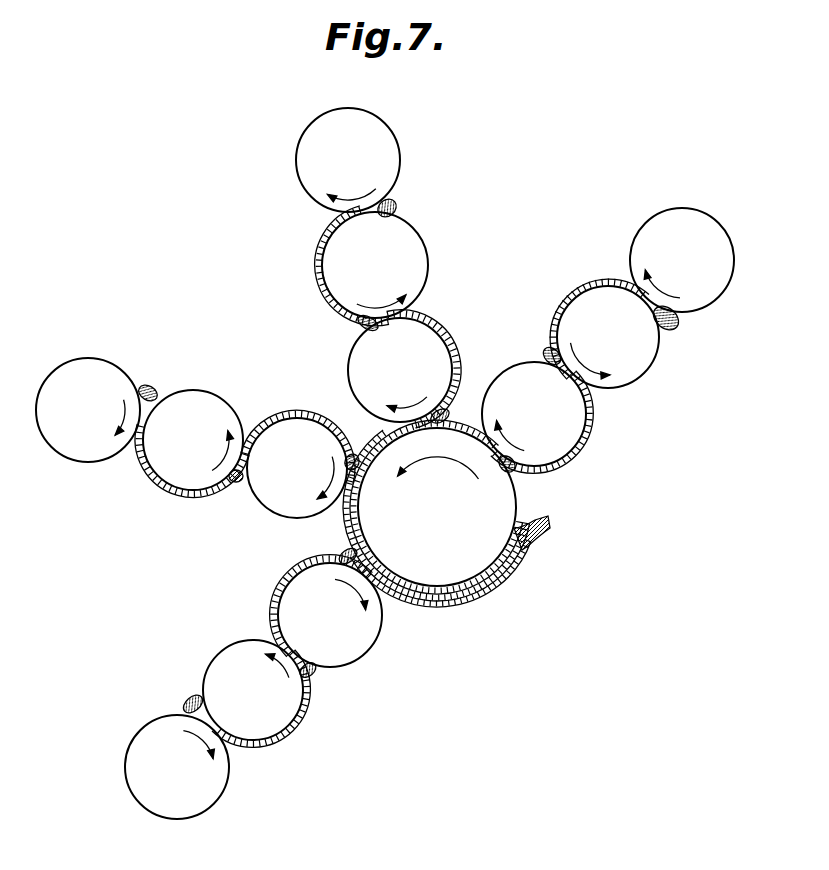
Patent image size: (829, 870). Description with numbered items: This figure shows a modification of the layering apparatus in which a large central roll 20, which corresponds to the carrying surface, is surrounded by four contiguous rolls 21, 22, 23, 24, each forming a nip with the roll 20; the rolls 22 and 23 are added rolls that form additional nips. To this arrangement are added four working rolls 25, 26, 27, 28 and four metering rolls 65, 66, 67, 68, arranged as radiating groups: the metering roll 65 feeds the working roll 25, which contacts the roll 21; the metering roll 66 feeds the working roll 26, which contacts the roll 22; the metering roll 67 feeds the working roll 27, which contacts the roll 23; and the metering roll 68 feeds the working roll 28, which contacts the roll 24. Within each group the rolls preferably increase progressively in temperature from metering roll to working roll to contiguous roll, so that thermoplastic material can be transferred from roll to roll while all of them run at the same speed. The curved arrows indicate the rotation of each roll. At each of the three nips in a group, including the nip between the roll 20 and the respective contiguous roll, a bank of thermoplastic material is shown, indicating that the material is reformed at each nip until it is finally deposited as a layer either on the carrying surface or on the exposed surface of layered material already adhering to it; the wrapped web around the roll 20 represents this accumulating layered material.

The roll 20 is at (503, 502).
The roll 21 is at (565, 423).
The roll 22 is at (432, 357).
The roll 23 is at (312, 437).
The roll 24 is at (360, 640).
The working roll 25 is at (640, 353).
The working roll 26 is at (408, 263).
The working roll 27 is at (208, 402).
The working roll 28 is at (277, 708).
The metering roll 65 is at (645, 238).
The metering roll 66 is at (382, 147).
The metering roll 67 is at (110, 375).
The metering roll 68 is at (203, 782).